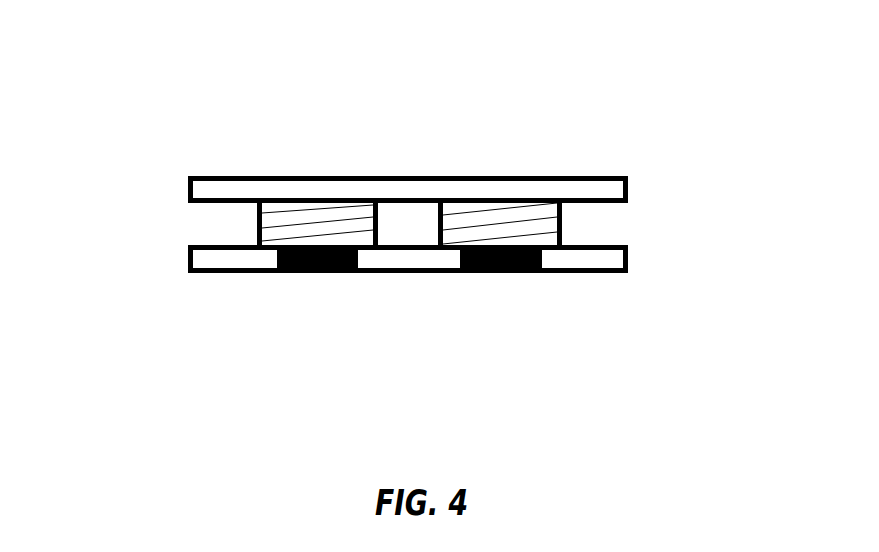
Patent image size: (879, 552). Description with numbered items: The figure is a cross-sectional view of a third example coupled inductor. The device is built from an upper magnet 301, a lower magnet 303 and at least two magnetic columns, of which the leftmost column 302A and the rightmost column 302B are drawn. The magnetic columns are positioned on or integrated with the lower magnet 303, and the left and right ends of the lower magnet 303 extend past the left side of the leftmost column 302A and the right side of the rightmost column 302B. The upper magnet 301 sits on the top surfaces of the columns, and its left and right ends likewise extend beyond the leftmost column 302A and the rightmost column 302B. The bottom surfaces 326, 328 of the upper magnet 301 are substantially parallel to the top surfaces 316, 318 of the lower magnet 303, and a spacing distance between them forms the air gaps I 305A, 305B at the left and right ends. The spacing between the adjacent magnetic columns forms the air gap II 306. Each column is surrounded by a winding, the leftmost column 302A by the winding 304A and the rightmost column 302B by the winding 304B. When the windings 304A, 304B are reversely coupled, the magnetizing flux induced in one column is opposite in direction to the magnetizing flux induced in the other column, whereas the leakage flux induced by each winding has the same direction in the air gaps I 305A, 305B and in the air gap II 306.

The upper magnet 301 is at (392, 195).
The bottom surface of the upper magnet 326 is at (223, 198).
The bottom surface of the upper magnet 328 is at (583, 195).
The top surface of the lower magnet 316 is at (205, 243).
The top surface of the lower magnet 318 is at (608, 243).
The lower magnet 303 is at (410, 260).
The leftmost column 302A is at (282, 233).
The rightmost column 302B is at (535, 230).
The air gap II 306 is at (422, 225).
The winding 304A is at (318, 220).
The winding 304B is at (488, 225).
The air gap I 305A is at (233, 227).
The air gap I 305B is at (743, 319).